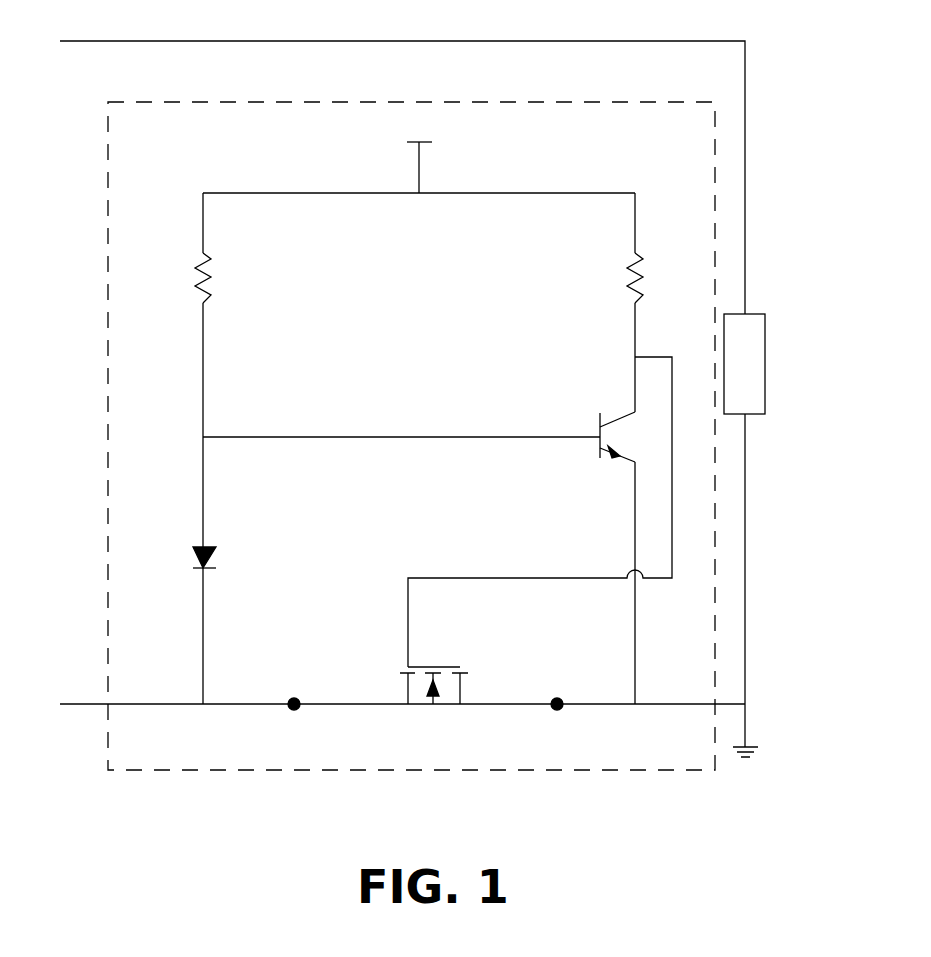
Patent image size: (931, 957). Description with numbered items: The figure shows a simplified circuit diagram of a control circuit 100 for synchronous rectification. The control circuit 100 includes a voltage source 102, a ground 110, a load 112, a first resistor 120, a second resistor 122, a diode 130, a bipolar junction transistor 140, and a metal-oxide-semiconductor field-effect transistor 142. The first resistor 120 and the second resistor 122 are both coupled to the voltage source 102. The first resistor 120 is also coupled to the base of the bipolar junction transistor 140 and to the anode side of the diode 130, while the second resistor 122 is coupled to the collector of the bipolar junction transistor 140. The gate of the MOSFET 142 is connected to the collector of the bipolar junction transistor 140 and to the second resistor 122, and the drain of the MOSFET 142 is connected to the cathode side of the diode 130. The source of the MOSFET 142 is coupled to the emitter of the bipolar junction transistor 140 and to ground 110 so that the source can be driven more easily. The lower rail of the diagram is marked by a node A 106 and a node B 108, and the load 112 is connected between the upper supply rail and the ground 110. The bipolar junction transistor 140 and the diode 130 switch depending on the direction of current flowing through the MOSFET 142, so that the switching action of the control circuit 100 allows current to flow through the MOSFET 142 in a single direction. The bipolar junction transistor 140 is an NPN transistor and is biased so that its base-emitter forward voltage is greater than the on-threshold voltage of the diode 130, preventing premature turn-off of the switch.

The control circuit 100 is at (238, 86).
The voltage source 102 is at (398, 136).
The node A 106 is at (291, 716).
The node B 108 is at (560, 716).
The ground 110 is at (765, 748).
The load 112 is at (768, 308).
The first resistor 120 is at (197, 286).
The second resistor 122 is at (642, 285).
The diode 130 is at (195, 565).
The bipolar junction transistor 140 is at (585, 456).
The metal-oxide-semiconductor field-effect transistor 142 is at (438, 716).